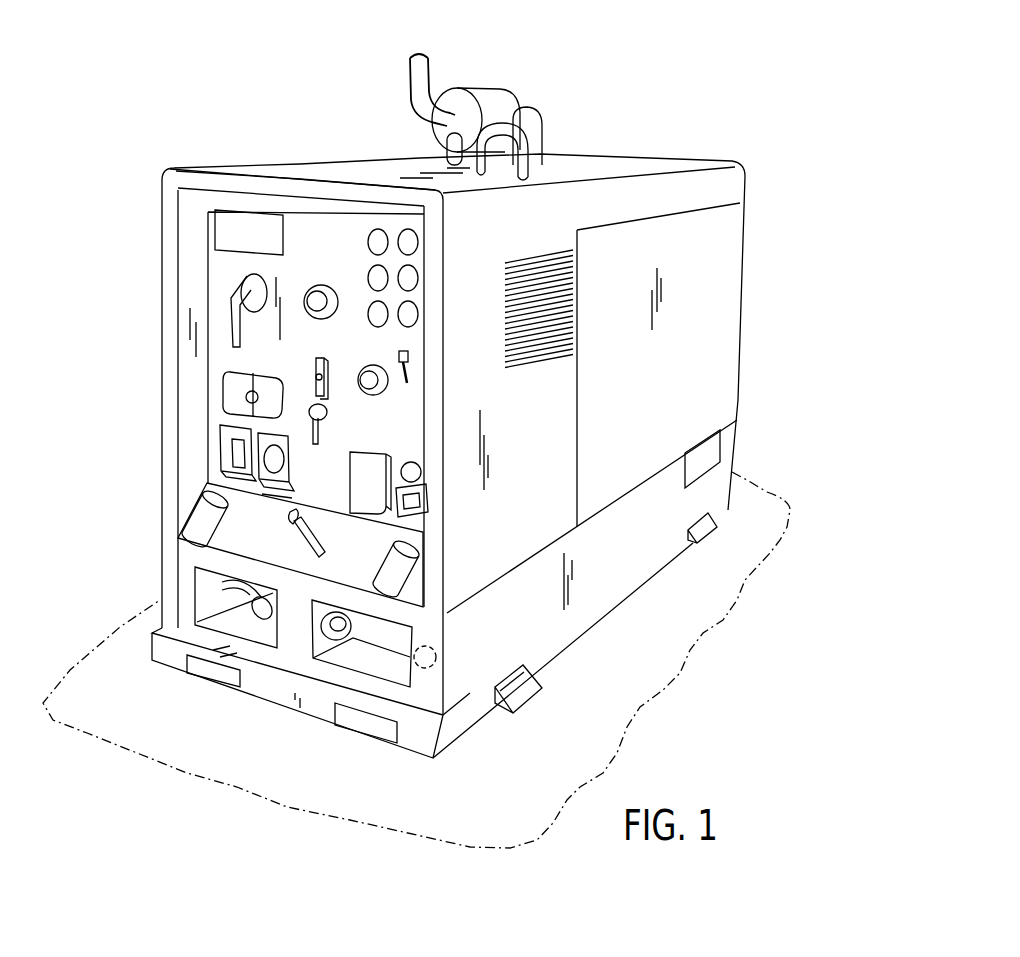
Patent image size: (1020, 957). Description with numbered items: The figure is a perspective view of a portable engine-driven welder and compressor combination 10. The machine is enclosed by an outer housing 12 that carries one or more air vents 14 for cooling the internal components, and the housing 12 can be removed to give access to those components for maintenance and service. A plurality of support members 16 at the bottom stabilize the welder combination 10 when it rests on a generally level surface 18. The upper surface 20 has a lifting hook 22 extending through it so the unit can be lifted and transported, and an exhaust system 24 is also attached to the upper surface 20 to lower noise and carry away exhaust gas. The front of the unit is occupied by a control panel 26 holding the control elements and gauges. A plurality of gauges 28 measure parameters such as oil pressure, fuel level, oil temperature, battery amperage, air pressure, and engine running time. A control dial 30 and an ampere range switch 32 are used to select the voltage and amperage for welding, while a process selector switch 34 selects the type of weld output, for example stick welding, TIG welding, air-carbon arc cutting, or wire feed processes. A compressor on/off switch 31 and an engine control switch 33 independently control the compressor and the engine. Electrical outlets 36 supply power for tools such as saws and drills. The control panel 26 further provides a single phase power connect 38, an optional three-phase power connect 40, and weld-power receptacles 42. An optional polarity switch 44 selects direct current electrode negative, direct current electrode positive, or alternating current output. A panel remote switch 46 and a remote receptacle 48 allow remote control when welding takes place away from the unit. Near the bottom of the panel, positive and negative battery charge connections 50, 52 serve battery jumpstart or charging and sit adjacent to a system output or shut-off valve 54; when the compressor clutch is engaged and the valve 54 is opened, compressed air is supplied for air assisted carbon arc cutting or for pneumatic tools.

The welder and compressor combination 10 is at (177, 121).
The outer housing 12 is at (551, 488).
The air vents 14 is at (541, 364).
The support members 16 is at (540, 697).
The surface 18 is at (497, 801).
The upper surface 20 is at (368, 168).
The lifting hook 22 is at (523, 153).
The exhaust system 24 is at (498, 97).
The control panel 26 is at (311, 277).
The gauges 28 is at (400, 315).
The control dial 30 is at (323, 320).
The compressor on/off switch 31 is at (409, 384).
The ampere range switch 32 is at (252, 315).
The engine control switch 33 is at (378, 394).
The process selector switch 34 is at (235, 397).
The electrical outlets 36 is at (233, 453).
The single phase power connect 38 is at (378, 489).
The three-phase power connect 40 is at (421, 476).
The weld-power receptacles 42 is at (222, 523).
The polarity switch 44 is at (292, 526).
The panel remote switch 46 is at (326, 360).
The remote receptacle 48 is at (330, 432).
The positive battery charge connection 50 is at (322, 629).
The negative battery charge connection 52 is at (414, 655).
The shut-off valve 54 is at (193, 593).